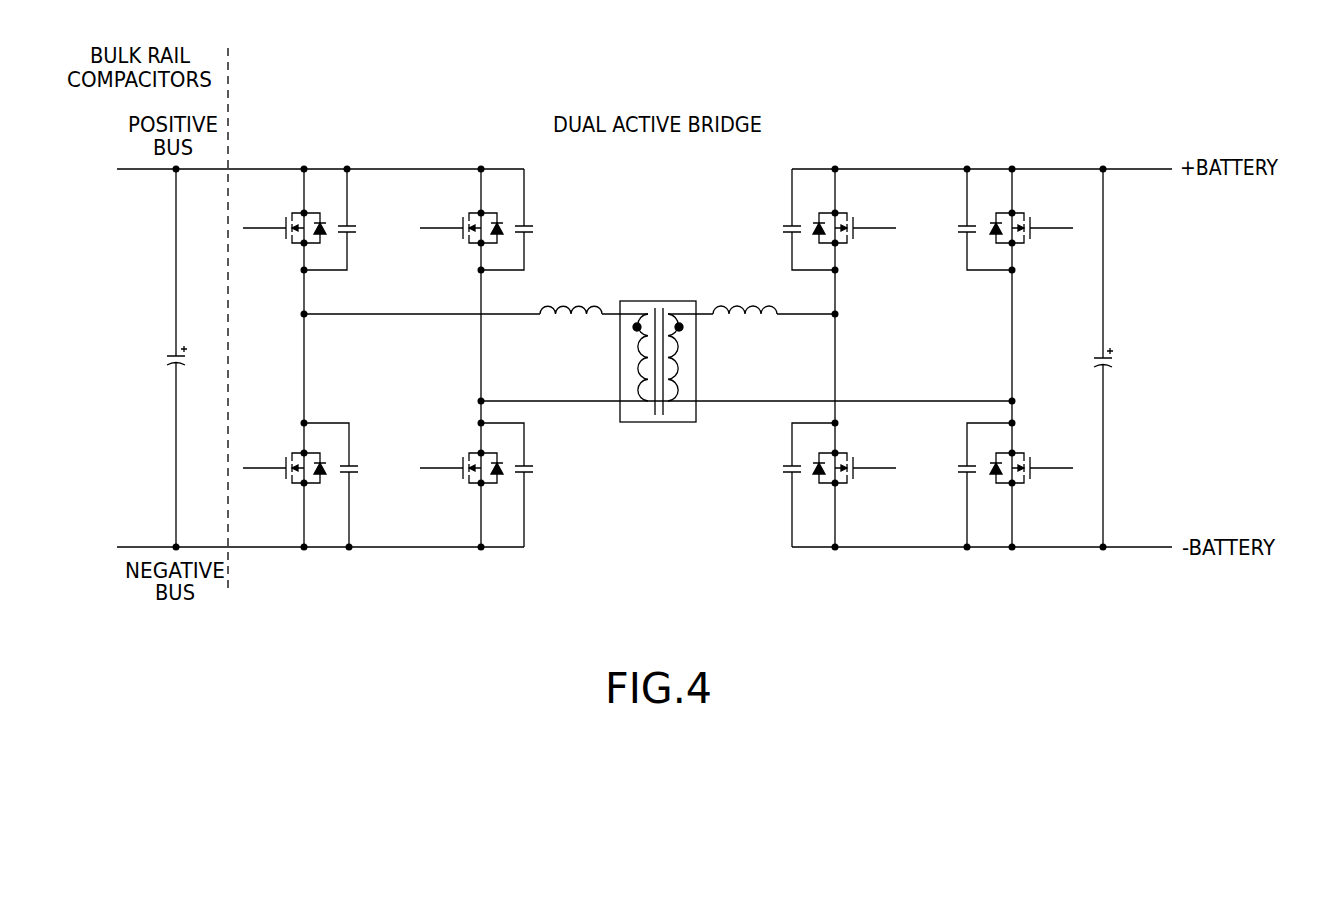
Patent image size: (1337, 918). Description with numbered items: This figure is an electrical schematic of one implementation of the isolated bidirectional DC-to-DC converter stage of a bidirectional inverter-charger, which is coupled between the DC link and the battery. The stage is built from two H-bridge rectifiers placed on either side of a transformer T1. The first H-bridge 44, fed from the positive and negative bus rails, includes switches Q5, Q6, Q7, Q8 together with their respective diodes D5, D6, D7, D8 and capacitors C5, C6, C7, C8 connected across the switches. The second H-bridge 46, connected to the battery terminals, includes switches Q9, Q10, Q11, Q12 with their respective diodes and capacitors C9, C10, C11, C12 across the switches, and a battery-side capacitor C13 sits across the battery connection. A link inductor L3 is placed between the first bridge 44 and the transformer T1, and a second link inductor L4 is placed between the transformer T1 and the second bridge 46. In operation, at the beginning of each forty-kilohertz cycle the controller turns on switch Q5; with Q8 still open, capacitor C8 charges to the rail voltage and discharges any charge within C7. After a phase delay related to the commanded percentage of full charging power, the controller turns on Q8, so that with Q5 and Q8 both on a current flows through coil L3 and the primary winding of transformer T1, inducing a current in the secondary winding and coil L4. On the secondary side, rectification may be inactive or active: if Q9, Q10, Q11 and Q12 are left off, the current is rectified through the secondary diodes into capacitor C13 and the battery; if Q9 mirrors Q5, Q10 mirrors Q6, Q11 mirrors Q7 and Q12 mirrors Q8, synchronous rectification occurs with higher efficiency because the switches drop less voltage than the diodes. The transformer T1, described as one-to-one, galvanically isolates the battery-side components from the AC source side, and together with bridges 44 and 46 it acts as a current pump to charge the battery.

The first H-bridge 44 is at (383, 595).
The second H-bridge 46 is at (1052, 595).
The capacitor C5 is at (273, 358).
The capacitor C6 is at (341, 485).
The capacitor C7 is at (518, 219).
The capacitor C8 is at (518, 485).
The capacitor C9 is at (793, 219).
The capacitor C10 is at (791, 485).
The capacitor C11 is at (967, 219).
The capacitor C12 is at (967, 485).
The capacitor C13 is at (1123, 358).
The switch Q5 is at (291, 215).
The switch Q6 is at (292, 456).
The switch Q7 is at (469, 215).
The switch Q8 is at (469, 456).
The switch Q9 is at (850, 216).
The switch Q10 is at (846, 456).
The switch Q11 is at (1023, 216).
The switch Q12 is at (1023, 456).
The diode D5 is at (322, 240).
The diode D6 is at (322, 483).
The diode D7 is at (499, 240).
The diode D8 is at (499, 483).
The link inductor L3 is at (570, 296).
The link inductor L4 is at (745, 296).
The transformer T1 is at (670, 422).